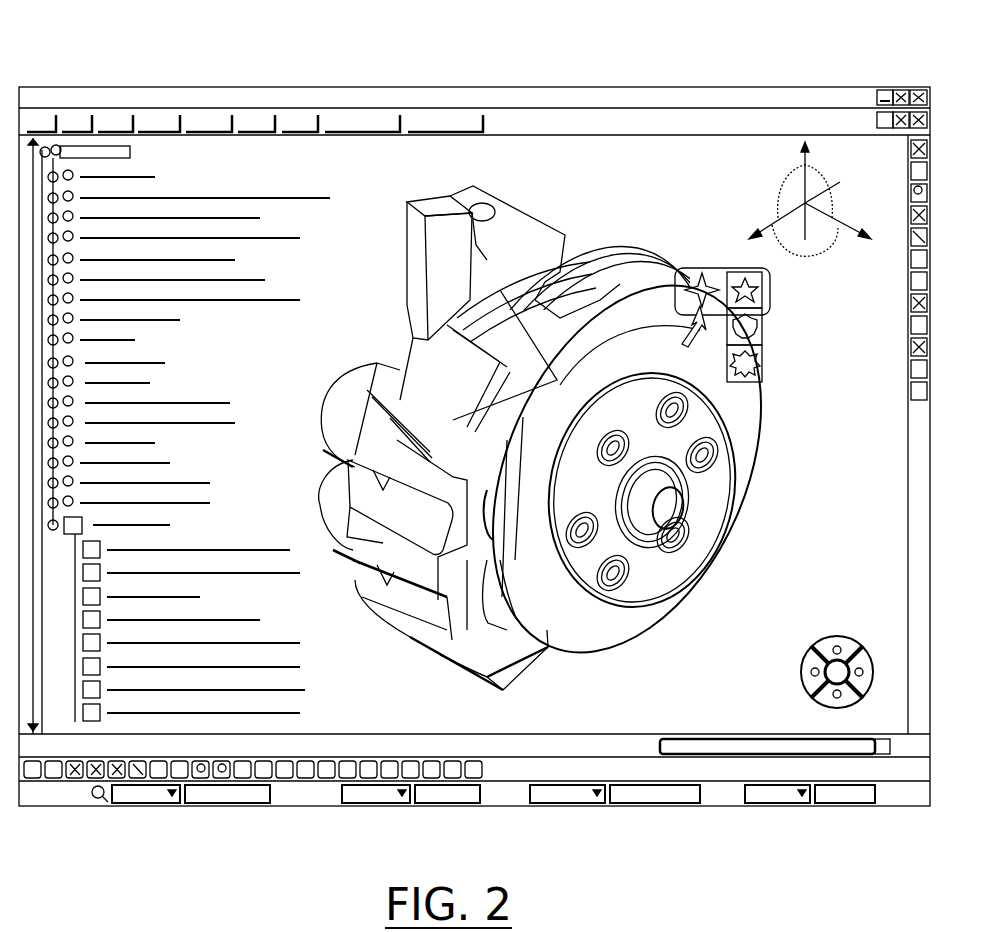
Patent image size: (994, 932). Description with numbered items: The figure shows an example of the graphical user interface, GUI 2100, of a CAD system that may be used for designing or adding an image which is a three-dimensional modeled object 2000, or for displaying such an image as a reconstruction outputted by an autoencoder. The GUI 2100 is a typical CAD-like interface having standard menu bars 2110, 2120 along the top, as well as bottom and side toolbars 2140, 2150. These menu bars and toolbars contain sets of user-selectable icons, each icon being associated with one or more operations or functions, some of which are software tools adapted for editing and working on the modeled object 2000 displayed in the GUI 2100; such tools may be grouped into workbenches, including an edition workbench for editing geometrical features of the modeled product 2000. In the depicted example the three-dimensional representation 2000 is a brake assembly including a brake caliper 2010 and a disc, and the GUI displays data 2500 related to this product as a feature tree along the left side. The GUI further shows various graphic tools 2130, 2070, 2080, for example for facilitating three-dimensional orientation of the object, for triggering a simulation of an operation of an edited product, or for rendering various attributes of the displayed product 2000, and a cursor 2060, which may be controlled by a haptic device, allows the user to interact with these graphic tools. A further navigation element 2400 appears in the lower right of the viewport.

The menu bar 2110 is at (588, 95).
The menu bar 2120 is at (675, 125).
The graphic tool 2130 is at (822, 240).
The 3D modeled object 2000 is at (370, 264).
The brake caliper 2010 is at (428, 368).
The graphic tool 2070 is at (712, 278).
The graphic tool 2080 is at (762, 333).
The cursor 2060 is at (760, 382).
The side toolbar 2150 is at (904, 425).
The GUI 2100 is at (738, 661).
The bottom toolbar 2140 is at (492, 735).
The navigation compass 2400 is at (824, 627).
The data 2500 is at (150, 417).